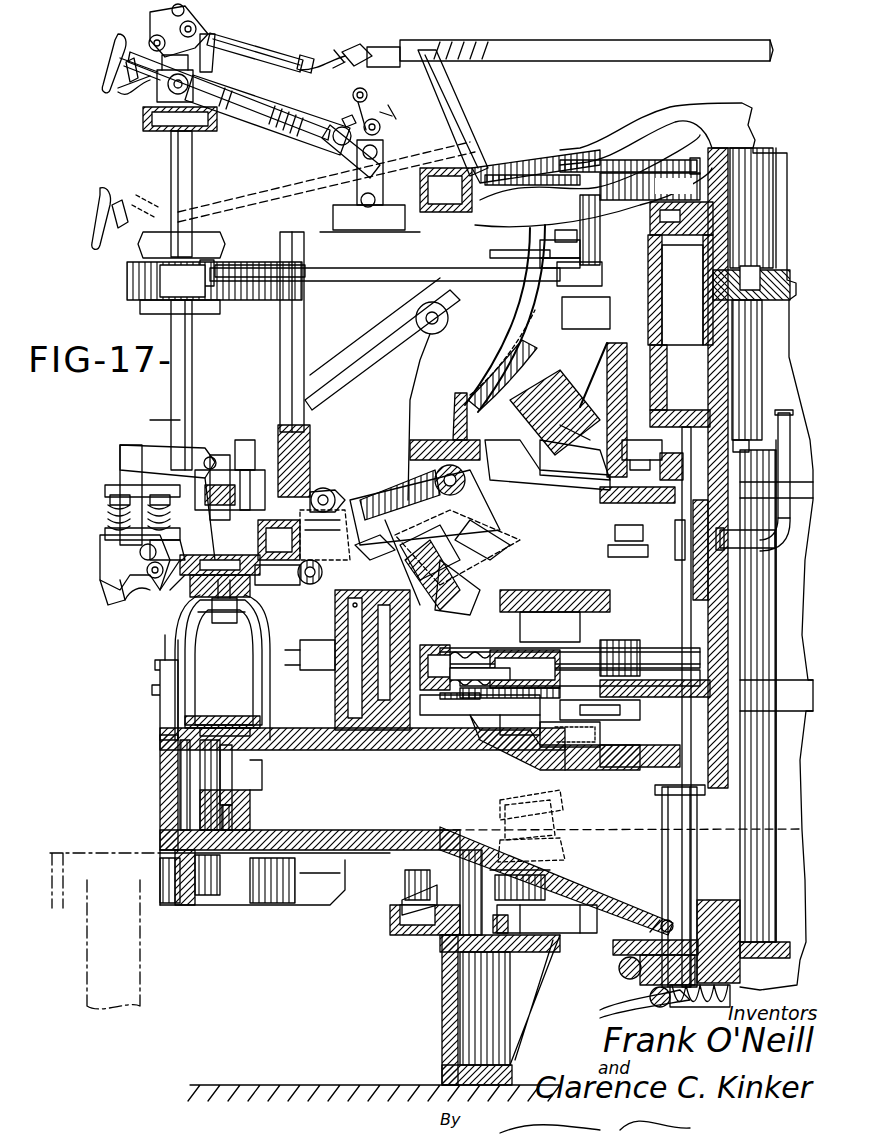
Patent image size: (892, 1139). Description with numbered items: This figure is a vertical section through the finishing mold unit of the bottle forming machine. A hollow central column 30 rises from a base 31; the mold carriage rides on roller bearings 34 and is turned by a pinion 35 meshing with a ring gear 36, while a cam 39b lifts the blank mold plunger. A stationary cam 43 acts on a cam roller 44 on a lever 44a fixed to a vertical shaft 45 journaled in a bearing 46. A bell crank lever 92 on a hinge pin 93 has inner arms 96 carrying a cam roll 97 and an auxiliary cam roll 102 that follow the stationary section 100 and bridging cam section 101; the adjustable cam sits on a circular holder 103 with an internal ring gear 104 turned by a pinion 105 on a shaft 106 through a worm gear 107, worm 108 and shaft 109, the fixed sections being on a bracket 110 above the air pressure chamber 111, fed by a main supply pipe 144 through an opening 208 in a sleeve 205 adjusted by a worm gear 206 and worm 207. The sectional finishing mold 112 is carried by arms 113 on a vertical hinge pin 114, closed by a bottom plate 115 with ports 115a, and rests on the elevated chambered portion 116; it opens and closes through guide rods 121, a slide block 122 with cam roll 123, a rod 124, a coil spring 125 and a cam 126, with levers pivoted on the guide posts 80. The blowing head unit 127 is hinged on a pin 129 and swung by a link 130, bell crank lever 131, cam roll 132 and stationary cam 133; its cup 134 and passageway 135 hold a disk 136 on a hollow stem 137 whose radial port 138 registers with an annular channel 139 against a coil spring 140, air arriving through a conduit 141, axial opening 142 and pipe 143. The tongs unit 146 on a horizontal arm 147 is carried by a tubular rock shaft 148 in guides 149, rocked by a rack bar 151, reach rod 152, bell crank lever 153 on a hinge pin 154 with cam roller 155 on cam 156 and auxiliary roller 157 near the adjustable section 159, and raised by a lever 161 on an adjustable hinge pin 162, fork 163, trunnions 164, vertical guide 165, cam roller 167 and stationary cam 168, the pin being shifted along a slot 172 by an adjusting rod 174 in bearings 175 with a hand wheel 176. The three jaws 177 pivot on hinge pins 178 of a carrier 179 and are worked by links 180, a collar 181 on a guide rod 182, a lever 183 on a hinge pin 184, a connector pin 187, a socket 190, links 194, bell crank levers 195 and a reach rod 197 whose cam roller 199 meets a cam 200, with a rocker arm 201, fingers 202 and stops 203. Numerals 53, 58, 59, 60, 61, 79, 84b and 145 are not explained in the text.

The central column 30 is at (778, 150).
The base 31 is at (442, 1015).
The roller bearings 34 is at (420, 882).
The pinion 35 is at (105, 852).
The ring gear 36 is at (185, 908).
The cam 39b is at (330, 885).
The stationary cam 43 is at (500, 918).
The cam roller 44 is at (520, 920).
The lever 44a is at (535, 895).
The vertical shaft 45 is at (565, 834).
The bearing 46 is at (570, 856).
The rail 53 is at (428, 700).
The block 58 is at (600, 709).
The plate 59 is at (640, 756).
The bracket 60 is at (580, 750).
The slide 61 is at (570, 734).
The column boss 79 is at (312, 440).
The guide posts 80 is at (304, 325).
The bottle mold 84b is at (222, 667).
The bell crank lever 92 is at (400, 380).
The horizontal hinge pin 93 is at (420, 326).
The arms 96 is at (545, 290).
The cam roll 97 is at (497, 348).
The stationary section 100 is at (515, 463).
The cam section 101 is at (568, 432).
The auxiliary cam roll 102 is at (605, 325).
The circular holder 103 is at (648, 330).
The internal ring gear 104 is at (655, 460).
The pinion 105 is at (668, 470).
The shaft 106 is at (662, 800).
The worm gear 107 is at (650, 985).
The worm 108 is at (648, 996).
The shaft 109 is at (668, 1005).
The bracket 110 is at (575, 475).
The air pressure chamber 111 is at (676, 532).
The sectional finishing mold 112 is at (172, 693).
The arms 113 is at (310, 655).
The vertical hinge pin 114 is at (352, 605).
The bottom plate 115 is at (242, 718).
The ports 115a is at (252, 770).
The elevated chambered portion 116 is at (165, 750).
The guide rods 121 is at (570, 658).
The slide block 122 is at (580, 684).
The cam roll 123 is at (518, 612).
The rod 124 is at (432, 656).
The coil spring 125 is at (480, 681).
The cam 126 is at (480, 648).
The blowing head unit 127 is at (277, 540).
The horizontal hinge pin 129 is at (323, 570).
The link 130 is at (352, 530).
The bell crank lever 131 is at (410, 495).
The cam roll 132 is at (428, 575).
The stationary cam 133 is at (450, 603).
The cup 134 is at (185, 596).
The vertical passageway 135 is at (227, 485).
The disk 136 is at (221, 626).
The hollow stem 137 is at (231, 479).
The radial port 138 is at (161, 588).
The annular channel 139 is at (308, 498).
The coil spring 140 is at (229, 601).
The conduit 141 is at (277, 573).
The axial opening 142 is at (370, 548).
The pipe 143 is at (478, 535).
The main supply pipe 144 is at (779, 412).
The mechanism 145 is at (149, 414).
The tongs unit 146 is at (100, 552).
The horizontal arm 147 is at (222, 481).
The tubular rock shaft 148 is at (172, 148).
The guides 149 is at (142, 262).
The rack bar 151 is at (258, 280).
The reach rod 152 is at (350, 280).
The bell crank lever 153 is at (575, 225).
The vertical hinge pin 154 is at (548, 245).
The cam roller 155 is at (583, 170).
The cam 156 is at (578, 204).
The auxiliary cam roller 157 is at (640, 165).
The adjustable section 159 is at (640, 192).
The lever 161 is at (320, 124).
The adjustable hinge pin 162 is at (395, 125).
The fork 163 is at (222, 94).
The trunnions 164 is at (195, 142).
The vertical guide 165 is at (158, 100).
The cam roller 167 is at (428, 190).
The stationary cam 168 is at (437, 210).
The longitudinal slot 172 is at (345, 160).
The adjusting rod 174 is at (125, 80).
The bearings 175 is at (118, 100).
The hand wheel 176 is at (118, 66).
The jaws 177 is at (96, 592).
The hinge pins 178 is at (128, 598).
The carrier 179 is at (159, 575).
The links 180 is at (105, 500).
The collar 181 is at (118, 468).
The guide rod 182 is at (105, 510).
The lever 183 is at (185, 445).
The horizontal hinge pin 184 is at (180, 452).
The connector pin 187 is at (245, 455).
The socket 190 is at (115, 42).
The links 194 is at (150, 24).
The bell crank levers 195 is at (221, 53).
The reach rod 197 is at (250, 52).
The cam roller 199 is at (353, 54).
The cam 200 is at (393, 46).
The rocker arm 201 is at (367, 96).
The fingers 202 is at (350, 117).
The stops 203 is at (388, 110).
The sleeve 205 is at (712, 320).
The worm gear 206 is at (556, 883).
The worm 207 is at (618, 966).
The opening 208 is at (680, 548).